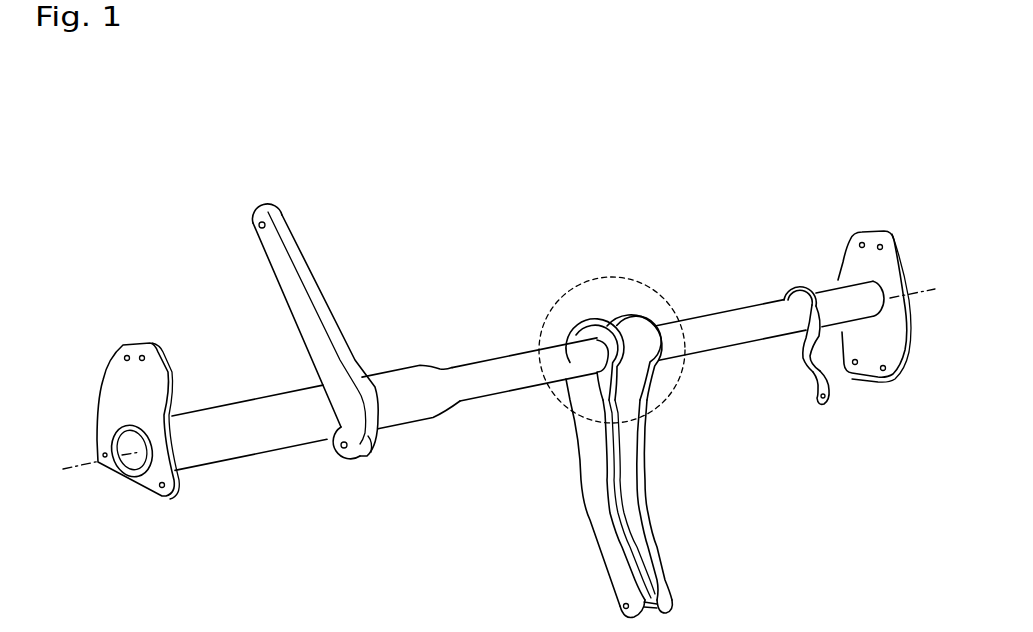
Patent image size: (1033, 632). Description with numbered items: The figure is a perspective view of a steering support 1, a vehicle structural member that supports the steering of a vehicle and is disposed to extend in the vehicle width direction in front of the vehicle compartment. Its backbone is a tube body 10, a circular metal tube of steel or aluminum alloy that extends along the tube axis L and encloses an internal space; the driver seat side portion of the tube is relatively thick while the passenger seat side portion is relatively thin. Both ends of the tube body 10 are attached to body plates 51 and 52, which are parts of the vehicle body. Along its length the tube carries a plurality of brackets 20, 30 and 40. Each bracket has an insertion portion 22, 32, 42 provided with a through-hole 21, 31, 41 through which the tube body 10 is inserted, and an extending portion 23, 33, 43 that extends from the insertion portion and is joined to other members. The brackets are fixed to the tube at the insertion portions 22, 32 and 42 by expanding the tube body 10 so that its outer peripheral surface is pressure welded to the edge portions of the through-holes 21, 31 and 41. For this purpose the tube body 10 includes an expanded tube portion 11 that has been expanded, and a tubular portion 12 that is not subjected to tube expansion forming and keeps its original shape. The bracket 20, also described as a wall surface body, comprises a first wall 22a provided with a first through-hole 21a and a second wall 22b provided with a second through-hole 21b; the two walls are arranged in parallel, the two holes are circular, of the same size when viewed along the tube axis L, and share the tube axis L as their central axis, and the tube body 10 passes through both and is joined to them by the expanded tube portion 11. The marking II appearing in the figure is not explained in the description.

The steering support 1 is at (400, 237).
The tube body 10 is at (252, 455).
The expanded tube portion 11 is at (617, 312).
The tubular portion 12 is at (522, 395).
The bracket 20 is at (588, 513).
The through-hole 21 is at (723, 438).
The first through-hole 21a is at (640, 353).
The second through-hole 21b is at (610, 383).
The insertion portion 22 is at (588, 315).
The first wall 22a is at (648, 313).
The second wall 22b is at (570, 338).
The extending portion 23 is at (660, 563).
The bracket 30 is at (367, 460).
The through-hole 31 is at (333, 441).
The insertion portion 32 is at (375, 443).
The extending portion 33 is at (290, 298).
The bracket 40 is at (803, 358).
The through-hole 41 is at (784, 298).
The insertion portion 42 is at (797, 285).
The extending portion 43 is at (838, 383).
The body plate 51 is at (150, 487).
The body plate 52 is at (903, 257).
The tube axis L is at (497, 379).
The section indicator II is at (618, 277).